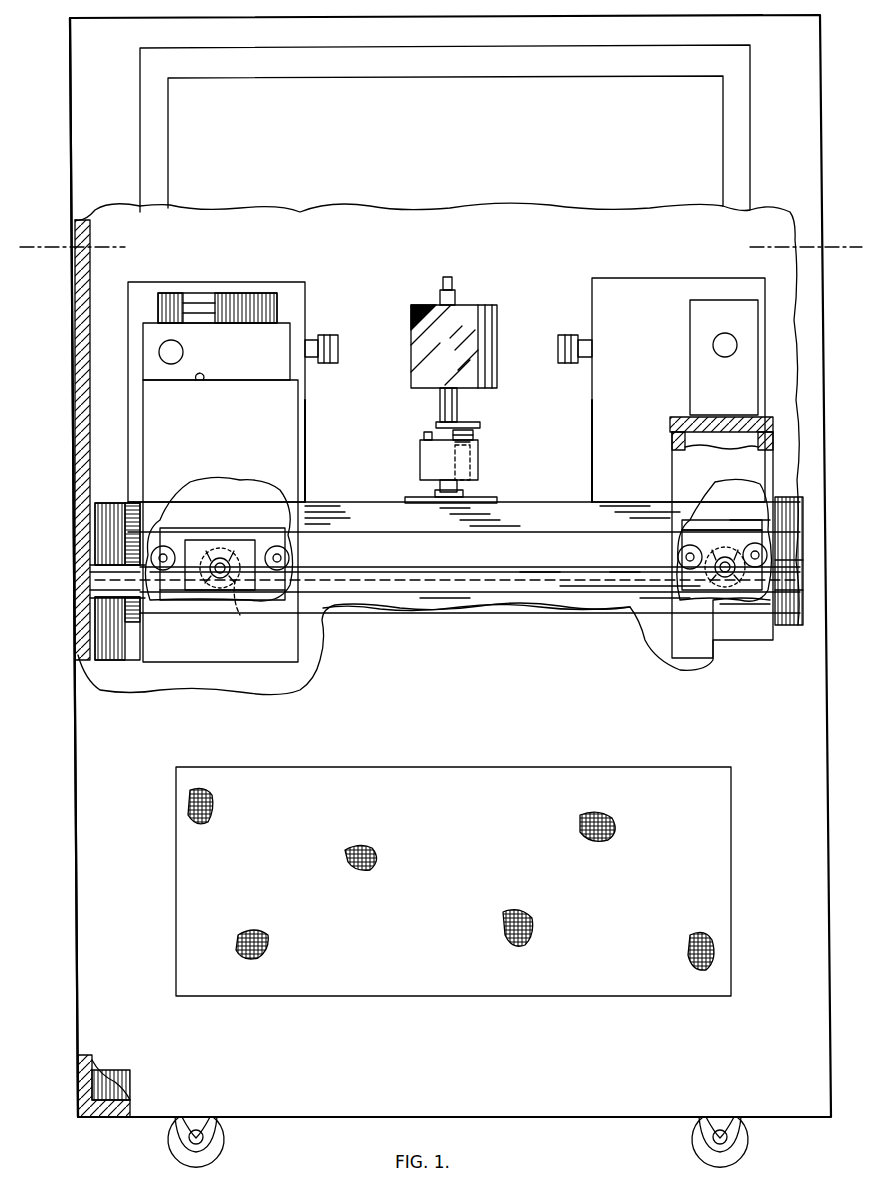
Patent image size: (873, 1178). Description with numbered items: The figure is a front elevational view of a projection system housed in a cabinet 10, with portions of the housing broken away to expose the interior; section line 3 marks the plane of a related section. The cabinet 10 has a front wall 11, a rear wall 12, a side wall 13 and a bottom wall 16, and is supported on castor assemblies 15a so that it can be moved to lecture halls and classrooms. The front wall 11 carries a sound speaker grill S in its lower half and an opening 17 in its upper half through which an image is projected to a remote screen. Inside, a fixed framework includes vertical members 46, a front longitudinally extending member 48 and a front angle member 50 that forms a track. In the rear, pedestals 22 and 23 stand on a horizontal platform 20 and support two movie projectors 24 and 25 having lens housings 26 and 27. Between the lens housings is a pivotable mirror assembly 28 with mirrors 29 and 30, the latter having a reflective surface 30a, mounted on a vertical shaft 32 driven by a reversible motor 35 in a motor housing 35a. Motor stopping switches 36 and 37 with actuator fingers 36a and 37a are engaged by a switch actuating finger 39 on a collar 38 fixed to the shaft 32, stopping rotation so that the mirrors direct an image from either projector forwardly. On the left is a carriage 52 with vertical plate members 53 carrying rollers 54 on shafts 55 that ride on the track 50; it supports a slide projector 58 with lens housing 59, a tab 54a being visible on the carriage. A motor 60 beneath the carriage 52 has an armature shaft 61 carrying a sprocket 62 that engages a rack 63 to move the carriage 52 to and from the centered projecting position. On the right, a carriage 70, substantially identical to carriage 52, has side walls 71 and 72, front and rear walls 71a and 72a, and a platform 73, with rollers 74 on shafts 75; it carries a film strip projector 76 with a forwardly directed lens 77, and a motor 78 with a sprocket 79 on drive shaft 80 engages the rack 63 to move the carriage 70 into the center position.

The section line 3- 3 is at (850, 245).
The cabinet 10 is at (70, 882).
The front wall 11 is at (90, 740).
The rear wall 12 is at (100, 470).
The side wall 13 is at (85, 573).
The castor assembly 15a is at (222, 1140).
The bottom wall 16 is at (108, 1118).
The opening 17 is at (722, 172).
The platform 20 is at (548, 514).
The pedestal 22 is at (305, 475).
The pedestal 23 is at (592, 475).
The movie projector 24 is at (300, 308).
The movie projector 25 is at (594, 300).
The projecting lens housing 26 is at (324, 364).
The projecting lens housing 27 is at (564, 364).
The mirror assembly 28 is at (497, 302).
The mirror 29 is at (494, 386).
The mirror 30 is at (410, 354).
The reflective surface 30a is at (415, 330).
The vertical shaft 32 is at (452, 412).
The reversible electric motor 35 is at (480, 463).
The motor housing 35a is at (478, 478).
The motor stopping switch 36 is at (418, 448).
The actuator finger 36a is at (424, 434).
The motor stopping switch 37 is at (480, 456).
The actuator finger 37a is at (485, 440).
The collar 38 is at (440, 428).
The switch actuating finger 39 is at (478, 432).
The vertical member 46 is at (105, 655).
The longitudinally extending member 48 is at (322, 608).
The angle member 50 is at (418, 572).
The carriage 52 is at (110, 538).
The plate member 53 is at (220, 521).
The roller 54 is at (290, 556).
The carriage tab 54a is at (197, 382).
The shaft 55 is at (170, 546).
The slide projector 58 is at (216, 336).
The projecting lens housing 59 is at (165, 350).
The motor 60 is at (222, 545).
The armature shaft 61 is at (220, 556).
The sprocket 62 is at (178, 590).
The rack 63 is at (240, 614).
The carriage 70 is at (780, 471).
The side wall 71 is at (670, 440).
The front wall 71a is at (722, 545).
The side wall 72 is at (768, 430).
The rear wall 72a is at (680, 502).
The platform 73 is at (678, 416).
The roller 74 is at (688, 548).
The shaft 75 is at (688, 556).
The film strip projector 76 is at (724, 357).
The lens 77 is at (713, 346).
The motor 78 is at (708, 528).
The sprocket 79 is at (740, 545).
The drive shaft 80 is at (705, 580).
The sound speaker grill S is at (453, 881).